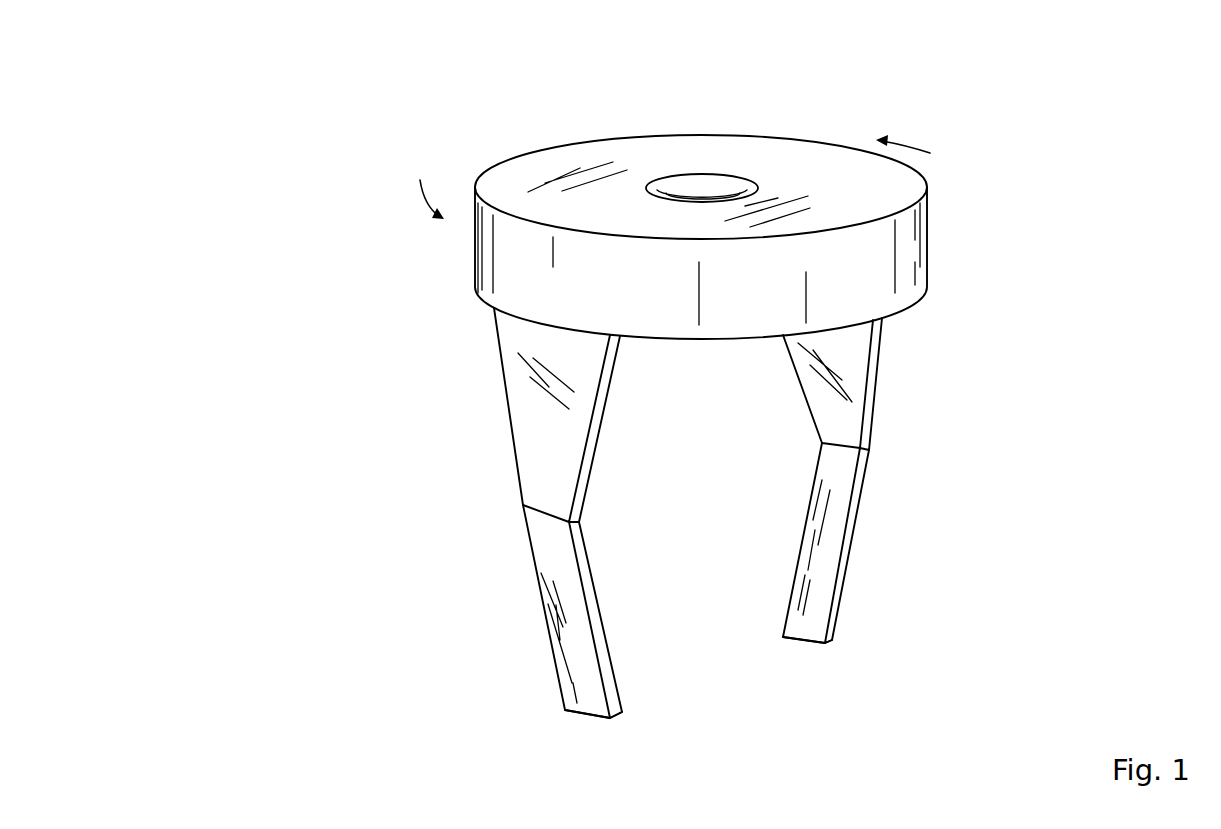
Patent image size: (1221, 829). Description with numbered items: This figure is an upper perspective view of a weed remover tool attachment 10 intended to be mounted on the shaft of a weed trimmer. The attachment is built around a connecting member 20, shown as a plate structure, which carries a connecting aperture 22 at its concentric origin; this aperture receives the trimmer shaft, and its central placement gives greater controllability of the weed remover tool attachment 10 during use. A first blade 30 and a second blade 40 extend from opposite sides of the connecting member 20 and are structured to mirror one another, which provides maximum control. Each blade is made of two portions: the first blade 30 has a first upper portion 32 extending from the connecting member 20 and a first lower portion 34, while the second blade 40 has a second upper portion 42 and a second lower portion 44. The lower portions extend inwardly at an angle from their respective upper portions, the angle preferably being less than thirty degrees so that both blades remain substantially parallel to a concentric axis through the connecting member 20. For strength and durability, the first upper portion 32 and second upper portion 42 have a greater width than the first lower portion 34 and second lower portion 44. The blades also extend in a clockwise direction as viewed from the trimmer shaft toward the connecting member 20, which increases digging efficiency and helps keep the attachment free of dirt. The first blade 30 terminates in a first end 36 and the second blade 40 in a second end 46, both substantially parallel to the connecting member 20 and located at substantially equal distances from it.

The weed remover tool attachment 10 is at (294, 142).
The connecting member 20 is at (923, 177).
The connecting aperture 22 is at (703, 173).
The first blade 30 is at (514, 543).
The first upper portion 32 is at (520, 413).
The first lower portion 34 is at (575, 598).
The first end 36 is at (588, 717).
The second blade 40 is at (882, 485).
The second upper portion 42 is at (862, 358).
The second lower portion 44 is at (833, 548).
The second end 46 is at (800, 640).